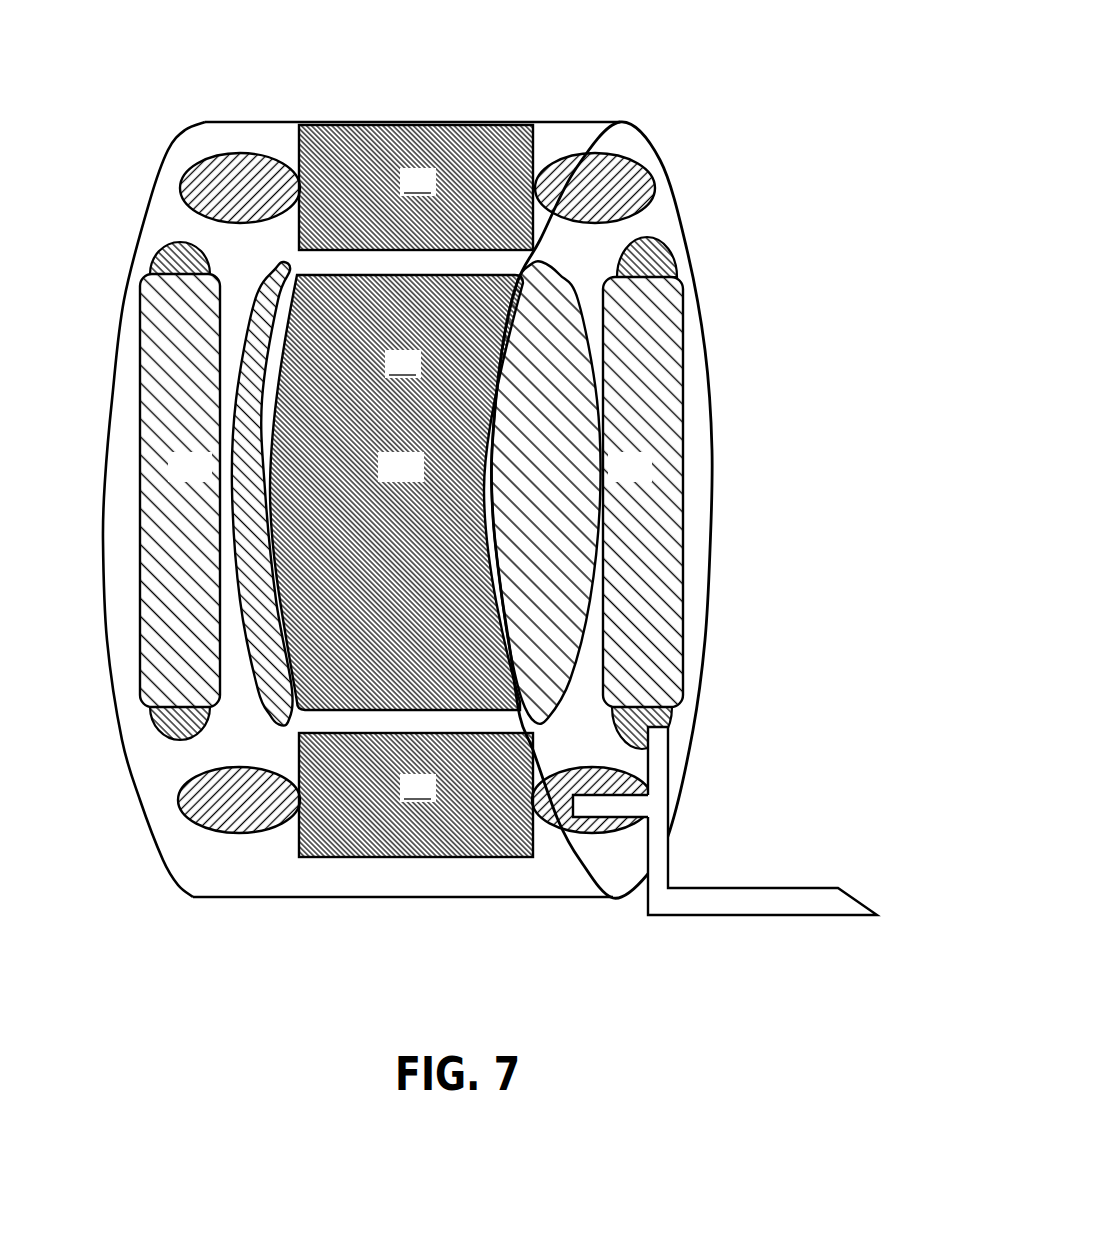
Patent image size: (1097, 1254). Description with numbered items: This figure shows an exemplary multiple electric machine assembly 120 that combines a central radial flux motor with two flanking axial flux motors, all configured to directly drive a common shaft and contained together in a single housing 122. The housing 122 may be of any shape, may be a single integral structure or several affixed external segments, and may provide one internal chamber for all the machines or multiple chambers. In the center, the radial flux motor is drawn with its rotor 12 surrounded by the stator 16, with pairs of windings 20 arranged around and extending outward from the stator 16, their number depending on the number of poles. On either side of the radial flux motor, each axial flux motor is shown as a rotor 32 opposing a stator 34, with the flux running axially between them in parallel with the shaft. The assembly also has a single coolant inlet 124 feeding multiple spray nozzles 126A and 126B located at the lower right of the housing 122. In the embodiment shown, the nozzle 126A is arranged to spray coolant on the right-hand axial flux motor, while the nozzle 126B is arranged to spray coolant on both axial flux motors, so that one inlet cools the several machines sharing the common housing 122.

The multiple electric machine assembly 120 is at (478, 68).
The housing 122 is at (230, 873).
The coolant inlet 124 is at (765, 902).
The spray nozzle 126A is at (658, 748).
The spray nozzle 126B is at (626, 810).
The rotor 12 is at (396, 492).
The stator 16 is at (416, 491).
The windings 20 is at (210, 177).
The rotor 32 is at (240, 404).
The stator 34 is at (165, 337).